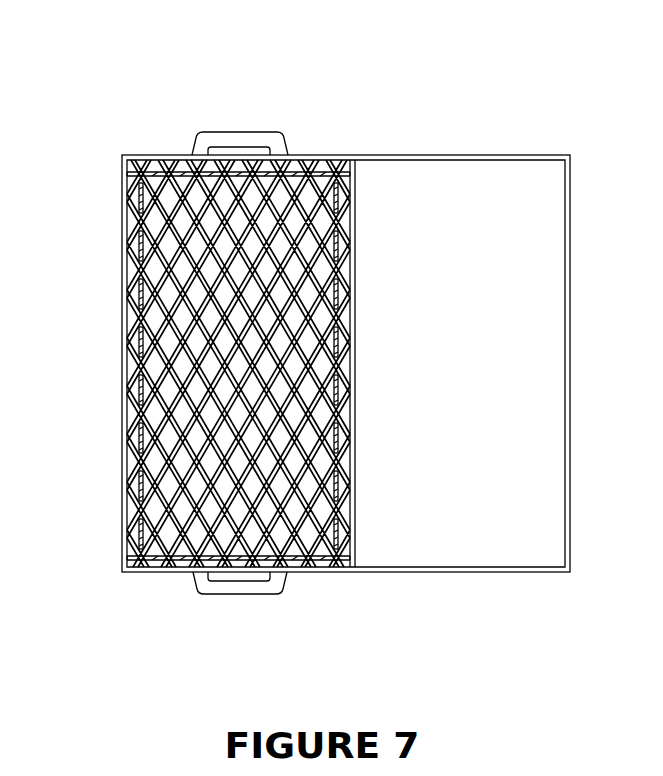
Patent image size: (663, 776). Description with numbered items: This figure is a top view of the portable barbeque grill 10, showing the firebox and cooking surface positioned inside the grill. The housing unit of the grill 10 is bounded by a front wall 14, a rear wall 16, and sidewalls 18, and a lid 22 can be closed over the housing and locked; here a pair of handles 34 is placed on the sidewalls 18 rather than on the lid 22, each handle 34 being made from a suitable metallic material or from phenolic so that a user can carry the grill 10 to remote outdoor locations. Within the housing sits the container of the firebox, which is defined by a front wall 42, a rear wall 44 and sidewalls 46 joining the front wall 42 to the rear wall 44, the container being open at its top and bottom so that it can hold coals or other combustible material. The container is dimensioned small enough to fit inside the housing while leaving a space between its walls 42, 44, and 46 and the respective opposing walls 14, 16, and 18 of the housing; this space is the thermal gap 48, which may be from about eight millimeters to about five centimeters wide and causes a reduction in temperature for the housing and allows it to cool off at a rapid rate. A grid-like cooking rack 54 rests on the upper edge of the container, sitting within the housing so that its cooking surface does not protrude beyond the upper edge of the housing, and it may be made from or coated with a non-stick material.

The portable barbeque grill 10 is at (533, 89).
The front wall 14 is at (124, 190).
The rear wall 16 is at (353, 223).
The sidewalls 18 is at (143, 162).
The lid 22 is at (546, 555).
The handle 34 is at (235, 138).
The front wall 42 is at (140, 492).
The rear wall 44 is at (337, 440).
The sidewalls 46 is at (182, 170).
The thermal gap 48 is at (307, 160).
The cooking rack 54 is at (185, 247).